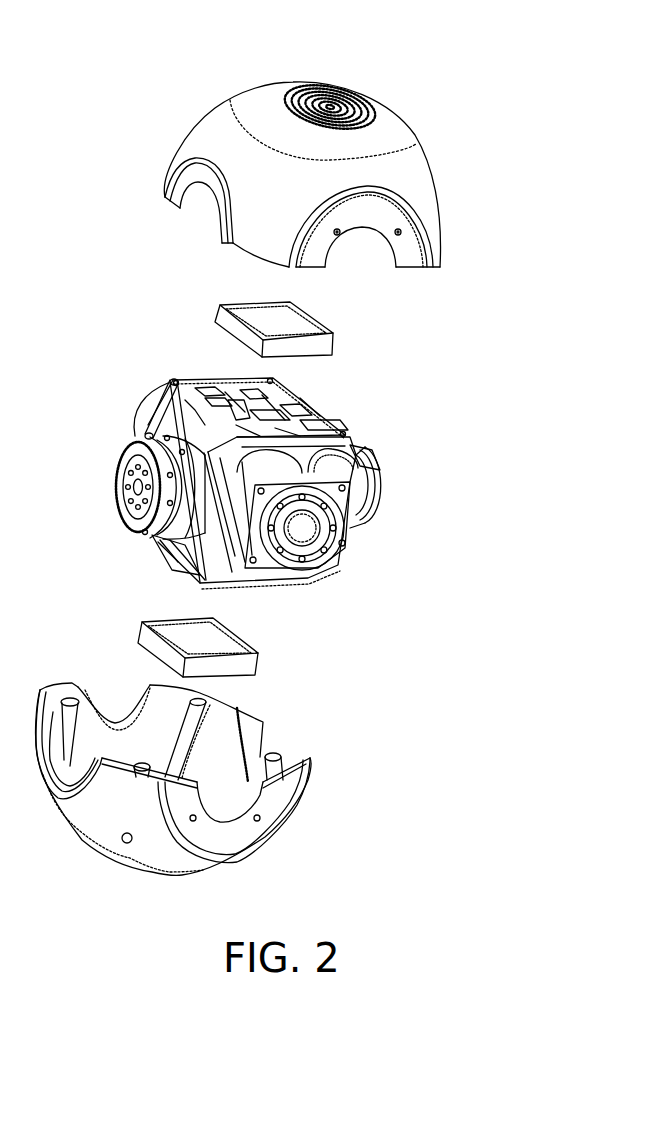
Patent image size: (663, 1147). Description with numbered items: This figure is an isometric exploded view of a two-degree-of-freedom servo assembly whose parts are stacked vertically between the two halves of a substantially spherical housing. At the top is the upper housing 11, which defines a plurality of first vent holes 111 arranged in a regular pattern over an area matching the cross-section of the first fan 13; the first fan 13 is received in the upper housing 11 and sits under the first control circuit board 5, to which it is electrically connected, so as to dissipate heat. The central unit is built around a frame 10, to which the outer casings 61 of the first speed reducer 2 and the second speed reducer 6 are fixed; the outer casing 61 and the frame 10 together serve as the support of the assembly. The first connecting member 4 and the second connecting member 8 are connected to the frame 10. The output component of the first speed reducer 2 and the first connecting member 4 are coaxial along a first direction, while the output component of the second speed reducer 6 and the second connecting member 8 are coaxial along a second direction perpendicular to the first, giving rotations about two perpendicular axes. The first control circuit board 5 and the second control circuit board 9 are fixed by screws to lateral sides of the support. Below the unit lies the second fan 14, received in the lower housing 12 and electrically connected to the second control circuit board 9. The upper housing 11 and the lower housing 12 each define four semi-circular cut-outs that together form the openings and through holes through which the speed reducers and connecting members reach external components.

The upper housing 11 is at (428, 193).
The first vent holes 111 is at (320, 92).
The first fan 13 is at (336, 333).
The first speed reducer 2 is at (143, 407).
The outer casing 61 is at (167, 400).
The first control circuit board 5 is at (307, 408).
The second speed reducer 6 is at (113, 473).
The second control circuit board 9 is at (167, 557).
The frame 10 is at (368, 452).
The second connecting member 8 is at (382, 487).
The first connecting member 4 is at (313, 570).
The second fan 14 is at (259, 655).
The lower housing 12 is at (310, 784).